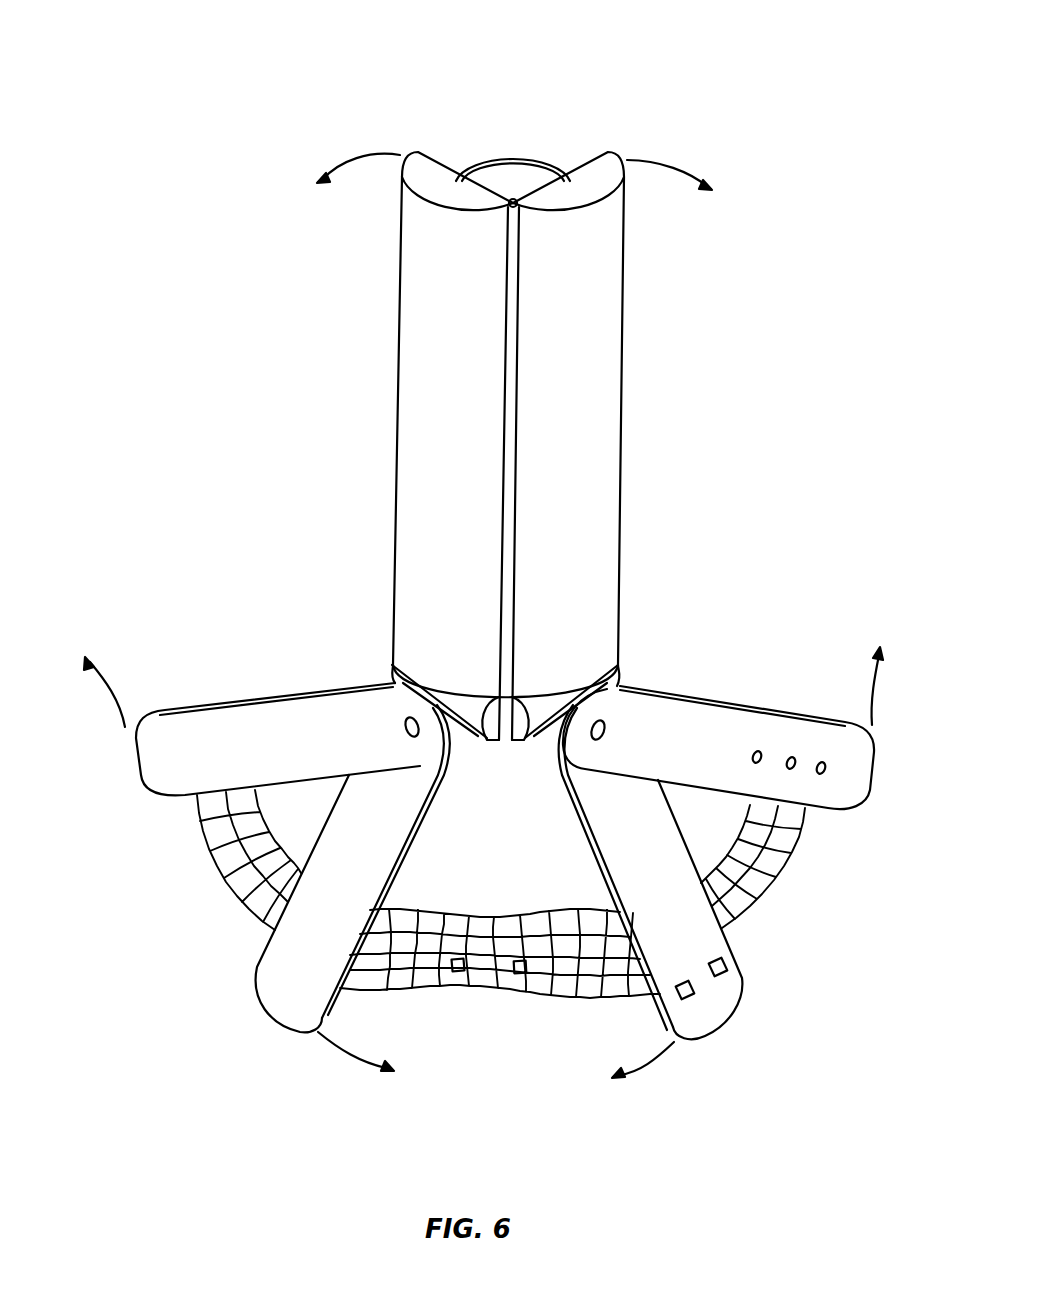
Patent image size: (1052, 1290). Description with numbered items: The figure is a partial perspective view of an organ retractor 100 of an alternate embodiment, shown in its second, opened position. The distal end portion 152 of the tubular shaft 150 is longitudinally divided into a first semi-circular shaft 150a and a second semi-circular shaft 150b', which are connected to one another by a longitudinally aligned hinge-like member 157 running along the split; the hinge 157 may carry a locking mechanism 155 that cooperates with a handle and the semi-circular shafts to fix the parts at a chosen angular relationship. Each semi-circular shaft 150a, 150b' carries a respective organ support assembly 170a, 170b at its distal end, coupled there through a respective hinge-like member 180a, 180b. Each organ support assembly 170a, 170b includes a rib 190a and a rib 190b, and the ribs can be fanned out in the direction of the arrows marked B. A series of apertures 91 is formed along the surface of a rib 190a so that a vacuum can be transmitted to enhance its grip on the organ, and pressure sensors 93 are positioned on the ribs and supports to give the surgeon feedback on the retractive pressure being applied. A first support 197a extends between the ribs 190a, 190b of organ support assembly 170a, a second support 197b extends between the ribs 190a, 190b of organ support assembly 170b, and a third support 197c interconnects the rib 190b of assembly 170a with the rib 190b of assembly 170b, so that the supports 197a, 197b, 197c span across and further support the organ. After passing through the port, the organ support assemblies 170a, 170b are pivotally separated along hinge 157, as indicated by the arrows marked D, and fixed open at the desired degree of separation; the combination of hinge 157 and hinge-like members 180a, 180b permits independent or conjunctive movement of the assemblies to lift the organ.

The organ retractor 100 is at (264, 74).
The tubular shaft 150 is at (396, 242).
The first semi-circular shaft 150a is at (410, 378).
The second semi-circular shaft 150b' is at (645, 408).
The distal end portion 152 is at (655, 532).
The locking mechanism 155 is at (540, 165).
The hinge-like member 157 is at (513, 199).
The hinge-like member 180a is at (393, 672).
The hinge-like member 180b is at (622, 680).
The rib 190a is at (182, 723).
The rib 190b is at (265, 995).
The apertures 91 is at (793, 755).
The pressure sensor 93 is at (458, 958).
The first support 197a is at (200, 822).
The second support 197b is at (805, 820).
The third support 197c is at (495, 1000).
The organ support assembly 170a is at (203, 888).
The organ support assembly 170b is at (772, 934).